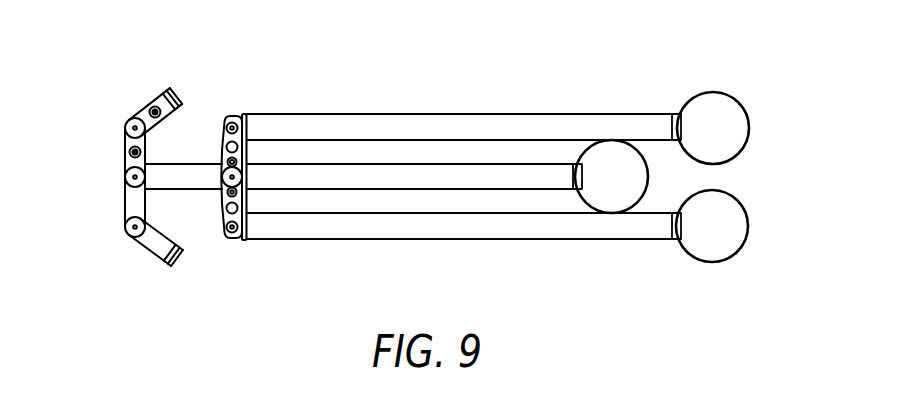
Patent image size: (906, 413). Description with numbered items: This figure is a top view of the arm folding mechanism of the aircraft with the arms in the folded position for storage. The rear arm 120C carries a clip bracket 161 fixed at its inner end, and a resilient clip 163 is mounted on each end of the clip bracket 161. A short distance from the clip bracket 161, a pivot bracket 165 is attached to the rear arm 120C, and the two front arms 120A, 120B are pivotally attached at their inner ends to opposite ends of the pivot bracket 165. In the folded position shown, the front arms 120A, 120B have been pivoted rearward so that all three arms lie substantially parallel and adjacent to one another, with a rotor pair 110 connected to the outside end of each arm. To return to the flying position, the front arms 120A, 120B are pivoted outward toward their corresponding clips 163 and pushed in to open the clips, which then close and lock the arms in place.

The rotor pair 110 is at (713, 262).
The front arm 120A is at (490, 240).
The front arm 120B is at (491, 114).
The rear arm 120C is at (384, 190).
The clip bracket 161 is at (124, 148).
The resilient clip 163 is at (167, 90).
The pivot bracket 165 is at (222, 201).